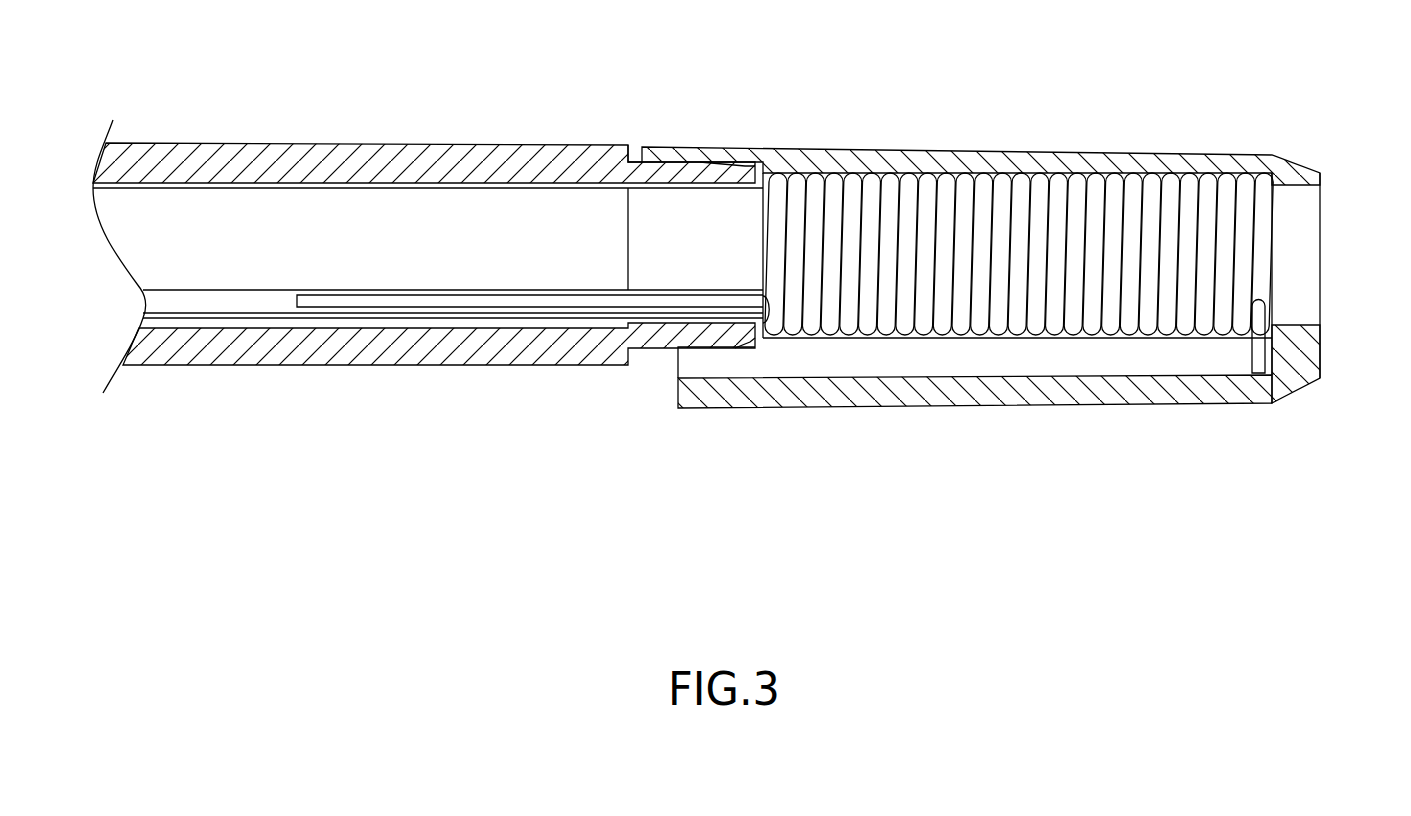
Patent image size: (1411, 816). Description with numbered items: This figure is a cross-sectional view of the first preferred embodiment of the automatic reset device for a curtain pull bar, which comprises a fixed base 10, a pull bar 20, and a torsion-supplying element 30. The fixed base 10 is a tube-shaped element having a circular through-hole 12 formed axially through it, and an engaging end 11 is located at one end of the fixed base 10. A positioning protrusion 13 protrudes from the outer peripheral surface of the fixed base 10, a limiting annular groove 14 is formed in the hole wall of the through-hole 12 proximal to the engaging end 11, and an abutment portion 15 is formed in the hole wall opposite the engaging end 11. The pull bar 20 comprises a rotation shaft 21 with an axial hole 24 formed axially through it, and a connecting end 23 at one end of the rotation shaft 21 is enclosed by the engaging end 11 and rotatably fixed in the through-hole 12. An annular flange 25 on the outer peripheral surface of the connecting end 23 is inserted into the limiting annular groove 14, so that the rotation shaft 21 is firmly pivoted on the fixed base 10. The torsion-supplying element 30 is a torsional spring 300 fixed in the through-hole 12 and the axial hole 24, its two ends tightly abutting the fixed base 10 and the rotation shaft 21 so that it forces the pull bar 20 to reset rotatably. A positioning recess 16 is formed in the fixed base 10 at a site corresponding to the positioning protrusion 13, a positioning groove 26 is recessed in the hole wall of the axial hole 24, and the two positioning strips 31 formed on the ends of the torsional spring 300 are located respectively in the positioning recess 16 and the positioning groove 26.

The fixed base 10 is at (1124, 124).
The engaging end 11 is at (702, 397).
The through-hole 12 is at (962, 173).
The positioning protrusion 13 is at (918, 397).
The limiting annular groove 14 is at (763, 167).
The abutment portion 15 is at (1297, 353).
The positioning recess 16 is at (855, 365).
The pull bar 20 is at (396, 128).
The rotation shaft 21 is at (282, 357).
The connecting end 23 is at (660, 170).
The axial hole 24 is at (249, 203).
The annular flange 25 is at (737, 165).
The positioning groove 26 is at (397, 300).
The torsion-supplying element 30 is at (1010, 173).
The torsional spring 300 is at (997, 320).
The positioning strips 31 is at (585, 300).